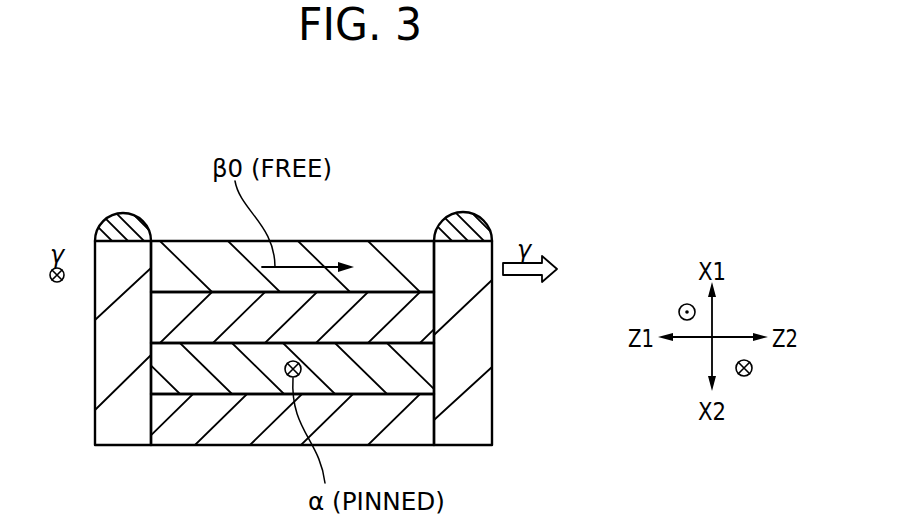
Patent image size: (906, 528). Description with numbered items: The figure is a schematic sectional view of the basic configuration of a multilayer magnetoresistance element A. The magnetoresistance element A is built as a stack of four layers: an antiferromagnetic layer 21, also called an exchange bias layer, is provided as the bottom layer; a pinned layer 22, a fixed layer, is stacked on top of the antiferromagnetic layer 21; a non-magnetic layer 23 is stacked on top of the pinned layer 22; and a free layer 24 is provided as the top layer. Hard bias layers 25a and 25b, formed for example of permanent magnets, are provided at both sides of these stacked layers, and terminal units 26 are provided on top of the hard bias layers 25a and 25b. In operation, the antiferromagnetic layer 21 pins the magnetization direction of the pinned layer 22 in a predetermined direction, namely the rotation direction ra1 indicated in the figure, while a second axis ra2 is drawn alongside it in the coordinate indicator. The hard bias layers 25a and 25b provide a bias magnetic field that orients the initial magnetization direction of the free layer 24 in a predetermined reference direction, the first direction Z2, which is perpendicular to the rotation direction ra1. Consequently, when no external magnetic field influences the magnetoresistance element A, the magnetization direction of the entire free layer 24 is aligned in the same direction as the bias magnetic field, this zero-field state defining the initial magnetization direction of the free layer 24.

The magnetoresistance element A is at (147, 115).
The antiferromagnetic layer 21 is at (252, 427).
The pinned layer 22 is at (186, 378).
The non-magnetic layer 23 is at (182, 307).
The free layer 24 is at (395, 257).
The hard bias layer 25a is at (107, 362).
The hard bias layer 25b is at (478, 396).
The terminal unit 26 is at (118, 214).
The rotation direction ra1 is at (751, 373).
The rotation axis ra2 is at (681, 306).